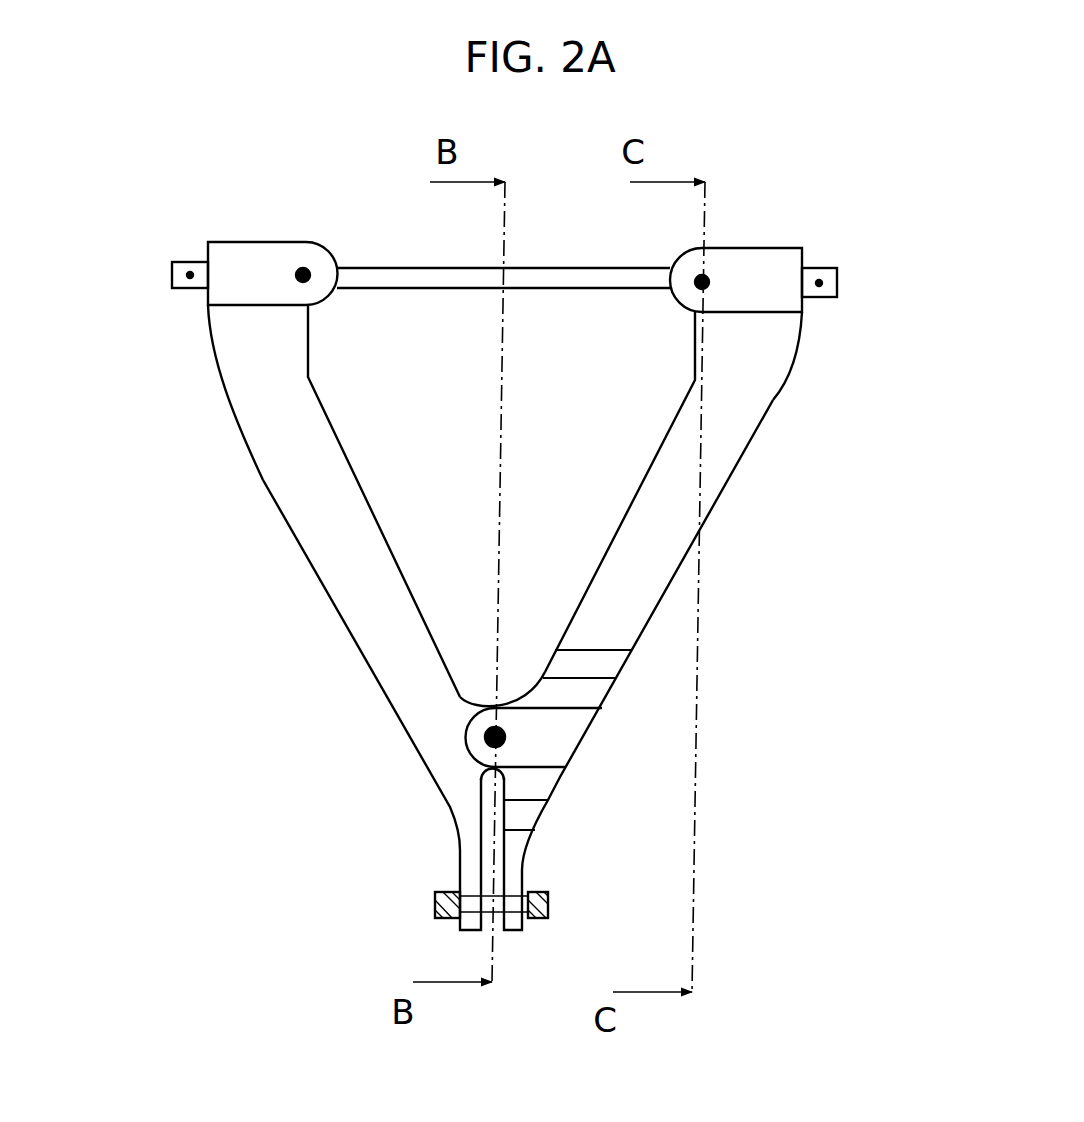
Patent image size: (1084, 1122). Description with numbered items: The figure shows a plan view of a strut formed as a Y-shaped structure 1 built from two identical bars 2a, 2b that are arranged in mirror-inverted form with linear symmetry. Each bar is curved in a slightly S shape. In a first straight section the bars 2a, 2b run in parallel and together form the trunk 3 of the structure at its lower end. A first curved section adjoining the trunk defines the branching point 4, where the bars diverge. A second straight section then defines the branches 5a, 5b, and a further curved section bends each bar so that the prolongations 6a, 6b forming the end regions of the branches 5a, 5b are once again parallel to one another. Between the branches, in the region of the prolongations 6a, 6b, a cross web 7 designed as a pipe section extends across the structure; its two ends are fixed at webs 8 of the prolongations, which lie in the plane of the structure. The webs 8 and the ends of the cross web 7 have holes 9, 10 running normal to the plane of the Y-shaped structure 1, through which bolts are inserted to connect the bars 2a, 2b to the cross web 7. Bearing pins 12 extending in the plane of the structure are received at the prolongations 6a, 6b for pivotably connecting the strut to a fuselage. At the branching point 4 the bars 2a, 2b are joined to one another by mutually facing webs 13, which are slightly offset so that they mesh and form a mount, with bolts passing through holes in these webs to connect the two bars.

The Y-shaped structure 1 is at (168, 642).
The bar 2a is at (286, 577).
The bar 2b is at (687, 591).
The trunk 3 is at (423, 875).
The branching point 4 is at (598, 747).
The branch 5a is at (330, 597).
The branch 5b is at (715, 530).
The prolongation 6a is at (203, 322).
The prolongation 6b is at (807, 320).
The cross web 7 is at (437, 291).
The web 8 is at (313, 243).
The hole 9 is at (298, 268).
The hole 10 is at (712, 282).
The bearing pin 12 is at (167, 260).
The web 13 is at (517, 752).